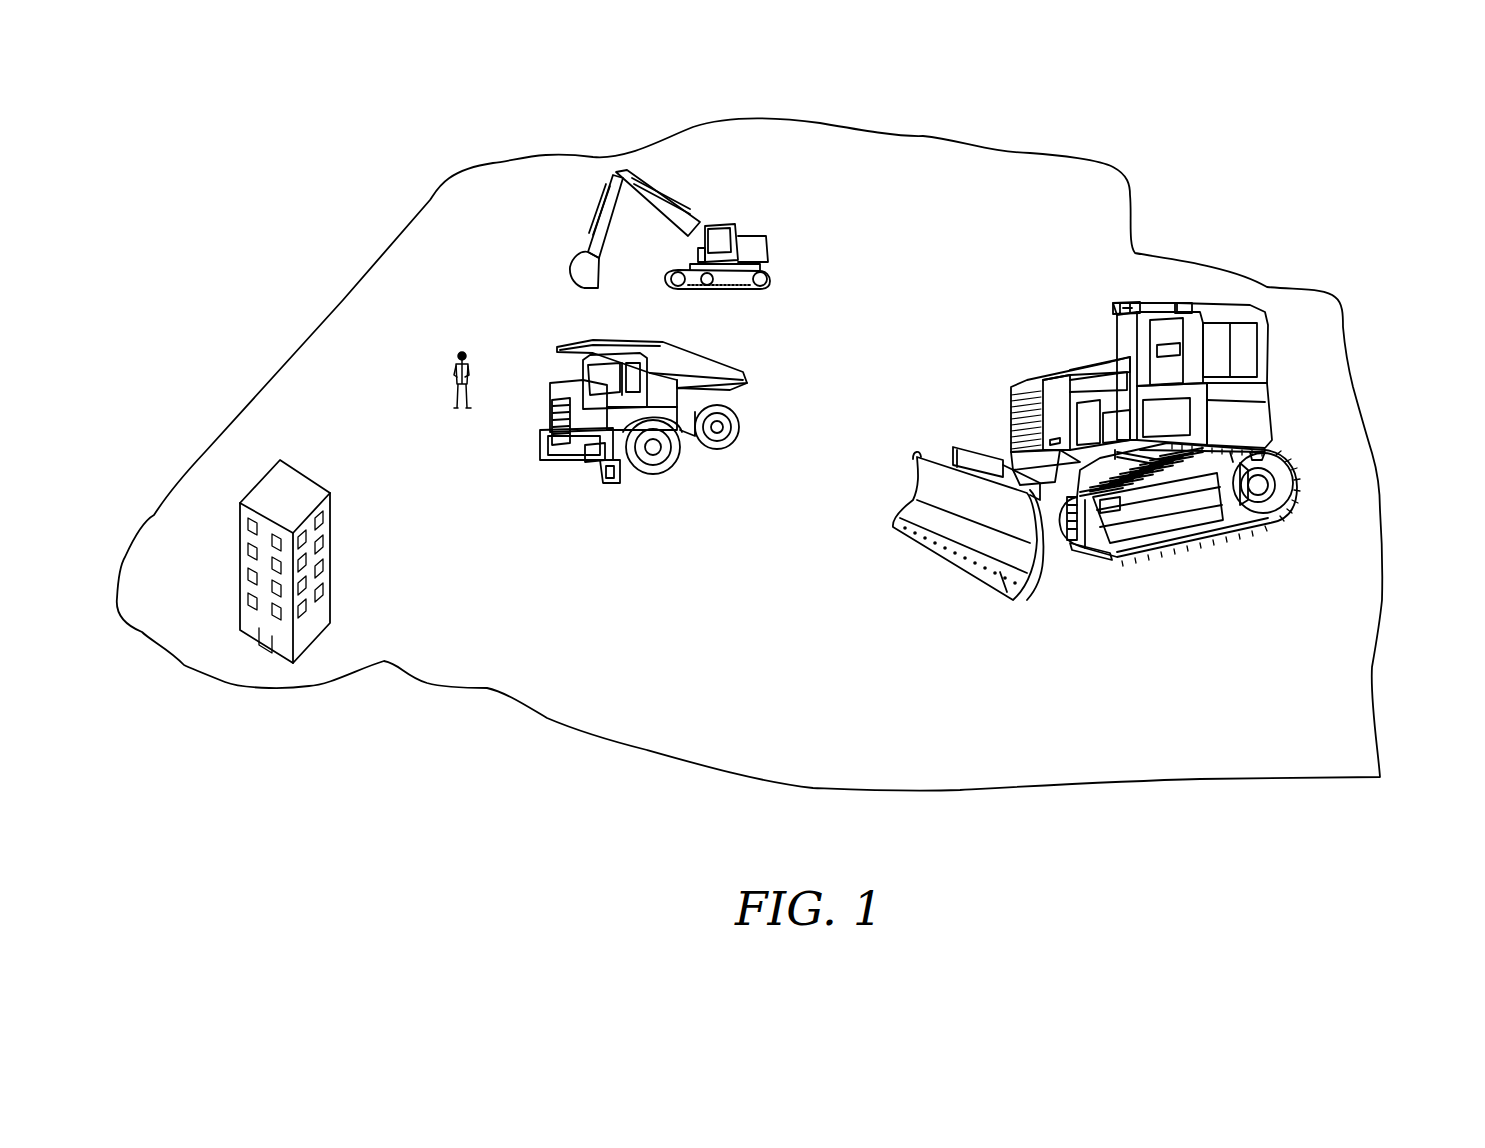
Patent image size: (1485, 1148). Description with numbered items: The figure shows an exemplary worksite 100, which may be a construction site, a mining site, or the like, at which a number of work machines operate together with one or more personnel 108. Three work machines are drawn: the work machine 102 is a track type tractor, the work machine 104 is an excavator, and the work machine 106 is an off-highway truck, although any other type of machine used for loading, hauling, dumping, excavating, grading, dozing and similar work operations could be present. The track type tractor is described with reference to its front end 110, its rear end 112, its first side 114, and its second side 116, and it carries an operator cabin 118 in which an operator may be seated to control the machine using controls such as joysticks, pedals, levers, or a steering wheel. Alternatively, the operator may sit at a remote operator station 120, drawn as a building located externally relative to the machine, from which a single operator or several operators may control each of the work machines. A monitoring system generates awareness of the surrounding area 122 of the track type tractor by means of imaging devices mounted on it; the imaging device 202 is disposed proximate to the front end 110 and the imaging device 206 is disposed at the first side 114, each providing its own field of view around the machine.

The worksite 100 is at (1280, 123).
The work machine 102 is at (1146, 473).
The work machine 104 is at (570, 225).
The work machine 106 is at (608, 500).
The personnel 108 is at (457, 349).
The front end 110 is at (937, 570).
The rear end 112 is at (1282, 401).
The first side 114 is at (1235, 553).
The second side 116 is at (1000, 430).
The operator cabin 118 is at (1223, 323).
The remote operator station 120 is at (273, 493).
The surrounding area 122 is at (1217, 595).
The imaging device 202 is at (1123, 303).
The imaging device 206 is at (1180, 307).